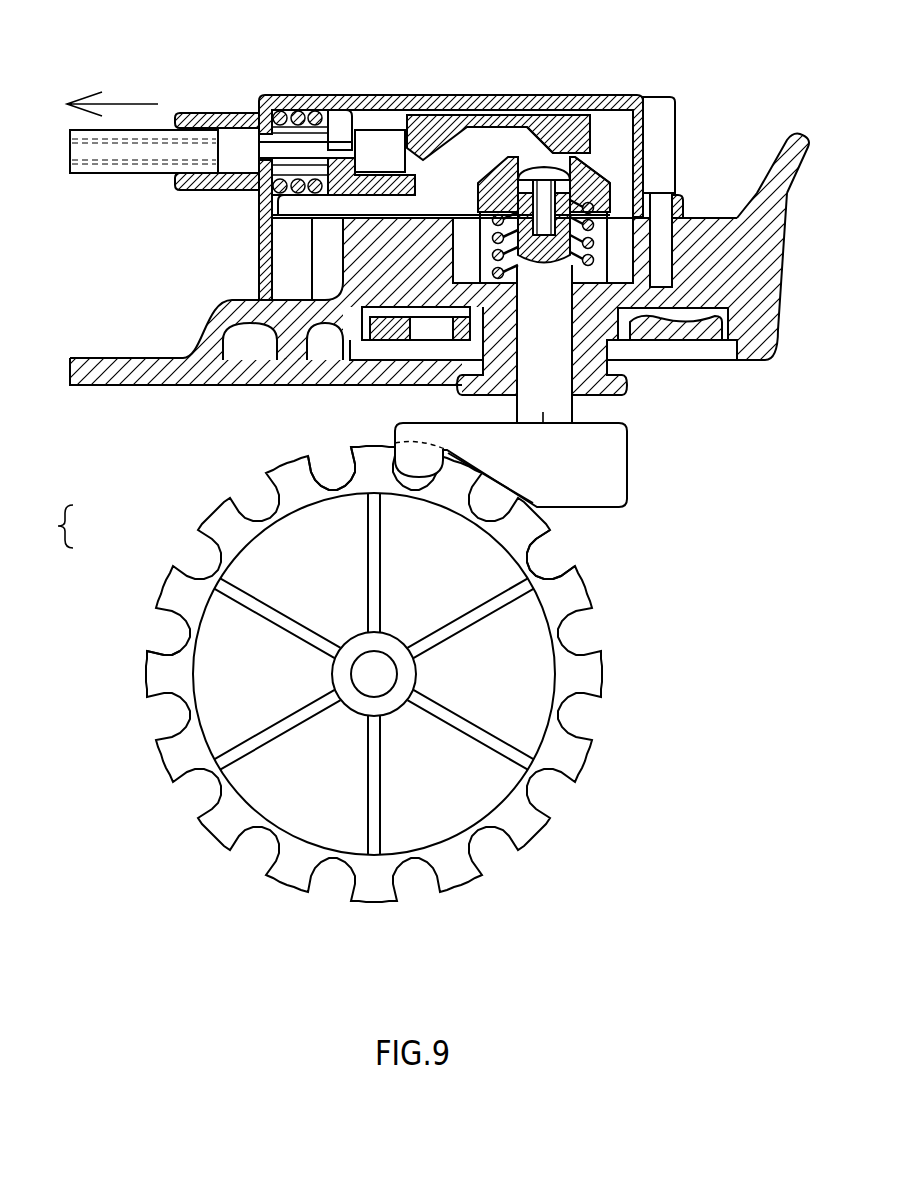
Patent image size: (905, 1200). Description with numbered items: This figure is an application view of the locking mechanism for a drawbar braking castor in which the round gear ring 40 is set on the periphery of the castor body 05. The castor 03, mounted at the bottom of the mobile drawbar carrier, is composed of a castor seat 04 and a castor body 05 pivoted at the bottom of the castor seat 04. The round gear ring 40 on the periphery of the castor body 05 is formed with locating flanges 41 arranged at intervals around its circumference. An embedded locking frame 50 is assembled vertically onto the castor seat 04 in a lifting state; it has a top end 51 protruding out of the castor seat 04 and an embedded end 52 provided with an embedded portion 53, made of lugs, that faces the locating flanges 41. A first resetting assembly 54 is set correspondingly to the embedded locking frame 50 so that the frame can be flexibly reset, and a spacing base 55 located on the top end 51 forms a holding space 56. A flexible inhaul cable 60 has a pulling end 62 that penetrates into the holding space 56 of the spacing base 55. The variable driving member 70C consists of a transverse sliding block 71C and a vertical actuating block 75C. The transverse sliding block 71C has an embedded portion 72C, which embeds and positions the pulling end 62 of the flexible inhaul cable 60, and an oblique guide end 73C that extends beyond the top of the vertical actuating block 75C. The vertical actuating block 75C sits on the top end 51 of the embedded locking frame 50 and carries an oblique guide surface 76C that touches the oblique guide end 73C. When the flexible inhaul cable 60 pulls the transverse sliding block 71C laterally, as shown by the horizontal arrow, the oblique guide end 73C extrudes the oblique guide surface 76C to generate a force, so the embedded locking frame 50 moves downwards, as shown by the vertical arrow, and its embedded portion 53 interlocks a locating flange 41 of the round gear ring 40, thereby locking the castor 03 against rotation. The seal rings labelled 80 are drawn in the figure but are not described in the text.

The castor 03 is at (54, 526).
The castor seat 04 is at (140, 387).
The castor body 05 is at (160, 585).
The round gear ring 40 is at (417, 664).
The locating flange 41 is at (362, 488).
The embedded locking frame 50 is at (630, 465).
The top end 51 is at (655, 215).
The embedded end 52 is at (438, 435).
The embedded portion 53 is at (395, 443).
The first resetting assembly 54 is at (498, 250).
The spacing base 55 is at (328, 93).
The holding space 56 is at (308, 206).
The flexible inhaul cable 60 is at (108, 175).
The pulling end 62 is at (370, 130).
The variable driving member 70C is at (555, 107).
The transverse sliding block 71C is at (503, 117).
The embedded portion 72C is at (407, 143).
The oblique guide end 73C is at (600, 127).
The vertical actuating block 75C is at (607, 156).
The oblique guide surface 76C is at (598, 142).
The seal rings 80 is at (279, 108).